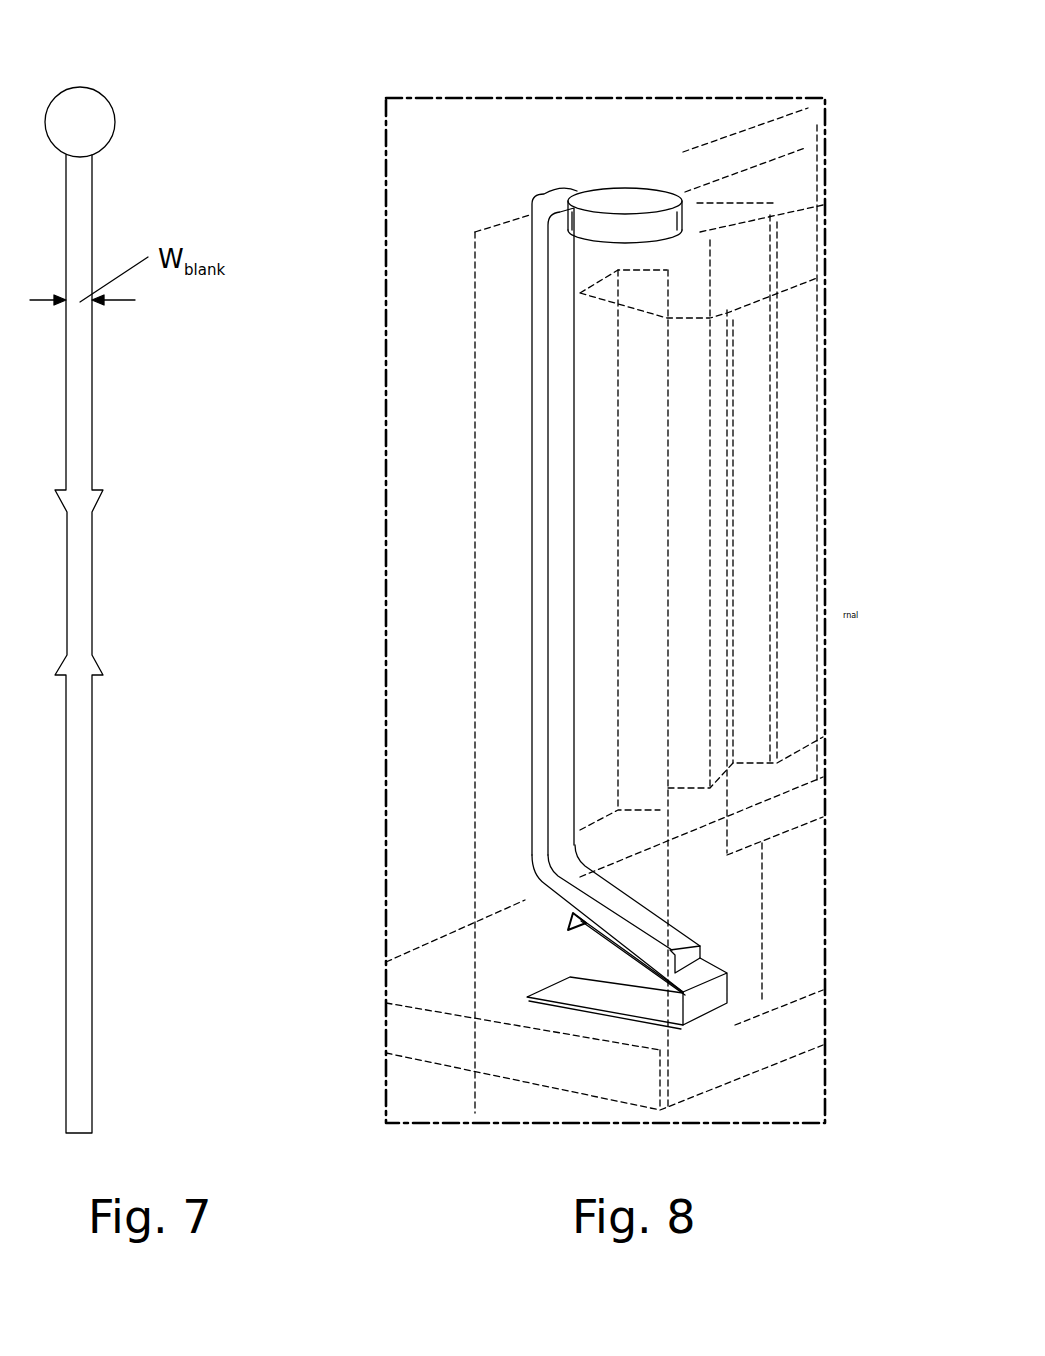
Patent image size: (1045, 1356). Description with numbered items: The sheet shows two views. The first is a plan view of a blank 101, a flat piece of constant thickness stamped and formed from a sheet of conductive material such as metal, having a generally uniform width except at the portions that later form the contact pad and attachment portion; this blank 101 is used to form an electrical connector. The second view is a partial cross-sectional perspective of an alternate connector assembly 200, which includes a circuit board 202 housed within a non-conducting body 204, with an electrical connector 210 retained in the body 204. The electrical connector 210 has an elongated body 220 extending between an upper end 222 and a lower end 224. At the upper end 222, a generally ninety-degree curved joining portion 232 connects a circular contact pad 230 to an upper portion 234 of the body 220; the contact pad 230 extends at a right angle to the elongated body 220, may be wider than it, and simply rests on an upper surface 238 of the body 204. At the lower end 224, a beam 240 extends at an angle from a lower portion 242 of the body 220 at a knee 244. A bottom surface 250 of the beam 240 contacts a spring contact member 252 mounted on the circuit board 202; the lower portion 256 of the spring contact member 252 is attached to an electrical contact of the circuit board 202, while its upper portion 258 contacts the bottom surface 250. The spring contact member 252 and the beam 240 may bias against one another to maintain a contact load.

In FIG. 7, the blank 101 is at (158, 107).
In FIG. 8, the connector assembly 200 is at (773, 70).
In FIG. 8, the circuit board 202 is at (438, 942).
In FIG. 8, the body 204 is at (475, 428).
In FIG. 8, the electrical connector 210 is at (540, 313).
In FIG. 8, the elongated body 220 is at (535, 597).
In FIG. 8, the upper end 222 is at (531, 252).
In FIG. 8, the lower end 224 is at (532, 792).
In FIG. 8, the contact pad 230 is at (630, 200).
In FIG. 8, the curved joining portion 232 is at (538, 197).
In FIG. 8, the upper portion 234 is at (532, 250).
In FIG. 8, the upper surface 238 is at (678, 182).
In FIG. 8, the beam 240 is at (638, 913).
In FIG. 8, the lower portion 242 is at (532, 835).
In FIG. 8, the knee 244 is at (533, 863).
In FIG. 8, the bottom surface 250 is at (632, 945).
In FIG. 8, the spring contact member 252 is at (708, 993).
In FIG. 8, the lower portion 256 is at (608, 1002).
In FIG. 8, the upper portion 258 is at (700, 973).